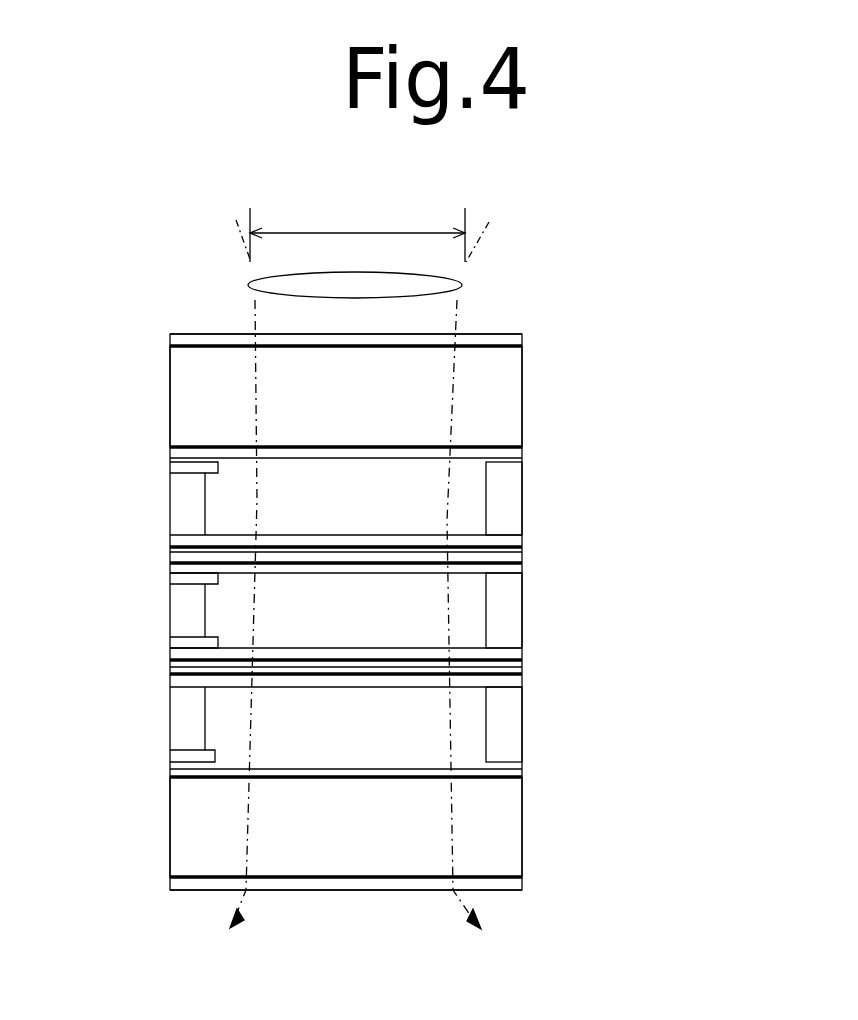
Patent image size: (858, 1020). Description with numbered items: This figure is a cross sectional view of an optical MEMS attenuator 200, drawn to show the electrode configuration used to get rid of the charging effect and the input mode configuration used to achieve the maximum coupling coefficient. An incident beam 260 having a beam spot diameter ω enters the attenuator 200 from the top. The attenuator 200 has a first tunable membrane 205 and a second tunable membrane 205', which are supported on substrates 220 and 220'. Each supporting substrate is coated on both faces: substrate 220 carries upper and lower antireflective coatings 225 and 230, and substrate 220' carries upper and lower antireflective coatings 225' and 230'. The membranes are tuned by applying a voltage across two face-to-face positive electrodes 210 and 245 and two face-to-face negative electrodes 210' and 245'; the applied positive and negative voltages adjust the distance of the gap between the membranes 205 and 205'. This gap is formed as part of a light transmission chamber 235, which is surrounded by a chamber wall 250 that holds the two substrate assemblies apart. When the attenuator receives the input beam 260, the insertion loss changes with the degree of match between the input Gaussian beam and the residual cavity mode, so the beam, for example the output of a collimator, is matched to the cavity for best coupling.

The optical MEMS attenuator 200 is at (723, 322).
The first tunable membrane 205 is at (397, 669).
The second tunable membrane 205' is at (401, 556).
The positive electrode 210 is at (131, 647).
The negative electrode 210' is at (131, 580).
The substrate 220 is at (282, 827).
The substrate 220' is at (285, 396).
The upper antireflective coating 225 is at (282, 769).
The upper antireflective coating 225' is at (285, 442).
The lower antireflective coating 230 is at (282, 884).
The lower antireflective coating 230' is at (285, 331).
The light transmission chamber 235 is at (268, 613).
The positive electrode 245 is at (282, 724).
The negative electrode 245' is at (285, 493).
The chamber wall 250 is at (522, 617).
The incident beam 260 is at (427, 286).